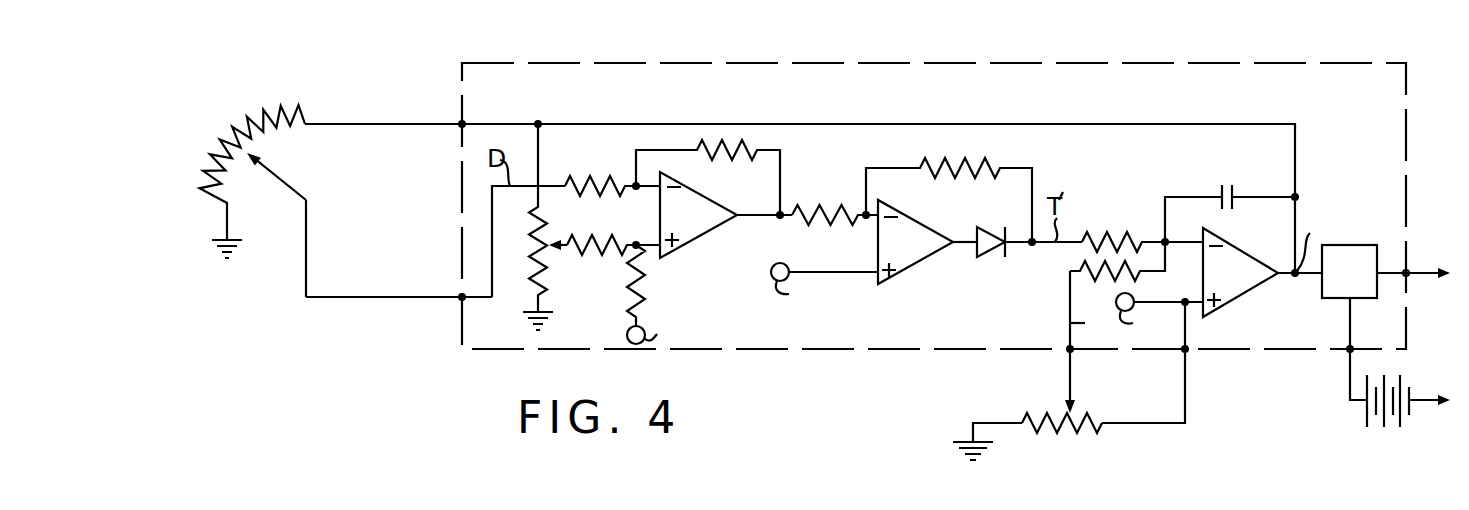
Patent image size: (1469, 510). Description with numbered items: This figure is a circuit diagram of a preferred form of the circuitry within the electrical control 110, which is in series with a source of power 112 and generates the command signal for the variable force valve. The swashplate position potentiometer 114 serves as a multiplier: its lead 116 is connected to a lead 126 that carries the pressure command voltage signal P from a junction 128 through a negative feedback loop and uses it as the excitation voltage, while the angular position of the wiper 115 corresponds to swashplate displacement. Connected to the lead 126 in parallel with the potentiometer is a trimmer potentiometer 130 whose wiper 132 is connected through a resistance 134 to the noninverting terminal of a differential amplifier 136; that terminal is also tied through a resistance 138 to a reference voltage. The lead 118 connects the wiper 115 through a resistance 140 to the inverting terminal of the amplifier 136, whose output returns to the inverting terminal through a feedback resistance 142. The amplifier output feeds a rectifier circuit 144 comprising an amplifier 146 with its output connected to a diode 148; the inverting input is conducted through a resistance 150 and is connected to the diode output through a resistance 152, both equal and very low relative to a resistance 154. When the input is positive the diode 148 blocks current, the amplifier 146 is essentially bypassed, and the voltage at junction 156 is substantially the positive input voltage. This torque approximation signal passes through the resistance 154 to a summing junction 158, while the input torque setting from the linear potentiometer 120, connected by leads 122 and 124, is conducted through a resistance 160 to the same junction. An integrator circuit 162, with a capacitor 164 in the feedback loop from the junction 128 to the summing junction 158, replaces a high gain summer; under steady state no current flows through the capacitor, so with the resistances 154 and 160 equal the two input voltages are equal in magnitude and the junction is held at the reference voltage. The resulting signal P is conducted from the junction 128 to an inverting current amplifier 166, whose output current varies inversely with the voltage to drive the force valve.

The electrical control 110 is at (776, 50).
The source of power 112 is at (1350, 430).
The swashplate position potentiometer 114 is at (198, 154).
The wiper 115 is at (277, 178).
The lead 116 is at (392, 123).
The lead 118 is at (407, 296).
The linear potentiometer 120 is at (1003, 407).
The lead 122 is at (1072, 372).
The lead 124 is at (1188, 372).
The lead 126 is at (942, 123).
The junction 128 is at (1297, 276).
The trimmer potentiometer 130 is at (521, 274).
The wiper 132 is at (560, 257).
The resistance 134 is at (603, 226).
The differential amplifier 136 is at (690, 246).
The resistance 138 is at (621, 298).
The resistance 140 is at (600, 166).
The feedback resistance 142 is at (730, 168).
The rectifier circuit 144 is at (938, 281).
The amplifier 146 is at (905, 274).
The diode 148 is at (982, 226).
The resistance 150 is at (835, 176).
The resistance 152 is at (961, 152).
The resistance 154 is at (1120, 205).
The junction 156 is at (1033, 245).
The summing junction 158 is at (1163, 239).
The resistance 160 is at (1090, 286).
The integrator circuit 162 is at (1192, 170).
The capacitor 164 is at (1240, 190).
The inverting current amplifier 166 is at (1352, 244).